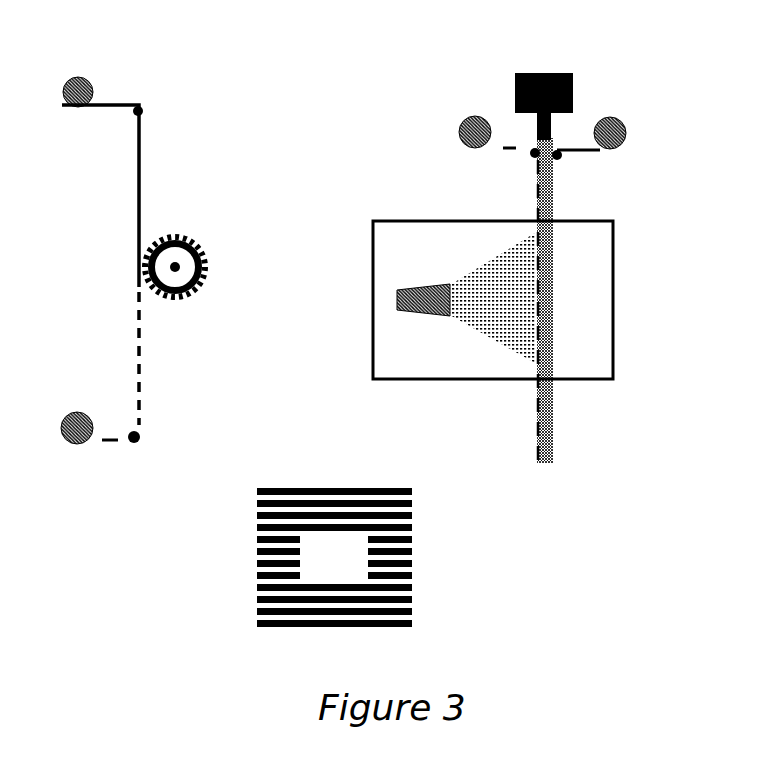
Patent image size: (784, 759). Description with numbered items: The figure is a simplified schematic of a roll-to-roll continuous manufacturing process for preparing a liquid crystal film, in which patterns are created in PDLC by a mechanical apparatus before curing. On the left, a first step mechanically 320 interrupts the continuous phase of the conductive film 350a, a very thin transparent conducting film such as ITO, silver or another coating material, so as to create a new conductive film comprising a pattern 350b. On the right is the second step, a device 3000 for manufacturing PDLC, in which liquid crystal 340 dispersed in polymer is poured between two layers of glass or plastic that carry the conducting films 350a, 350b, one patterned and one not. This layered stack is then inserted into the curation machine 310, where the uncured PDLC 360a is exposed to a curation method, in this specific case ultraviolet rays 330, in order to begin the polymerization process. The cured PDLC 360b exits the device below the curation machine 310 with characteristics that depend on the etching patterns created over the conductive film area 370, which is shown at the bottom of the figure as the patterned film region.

The device for manufacturing PDLC 3000 is at (290, 107).
The curation machine 310 is at (373, 238).
The mechanical interruption step 320 is at (125, 266).
The ultraviolet rays (UV) 330 is at (397, 300).
The liquid crystal 340 is at (573, 103).
The conductive film 350a is at (55, 95).
The patterned conductive film 350b is at (55, 432).
The uncured PDLC 360a is at (553, 186).
The cured PDLC 360b is at (553, 442).
The conductive film area with etching patterns 370 is at (334, 557).